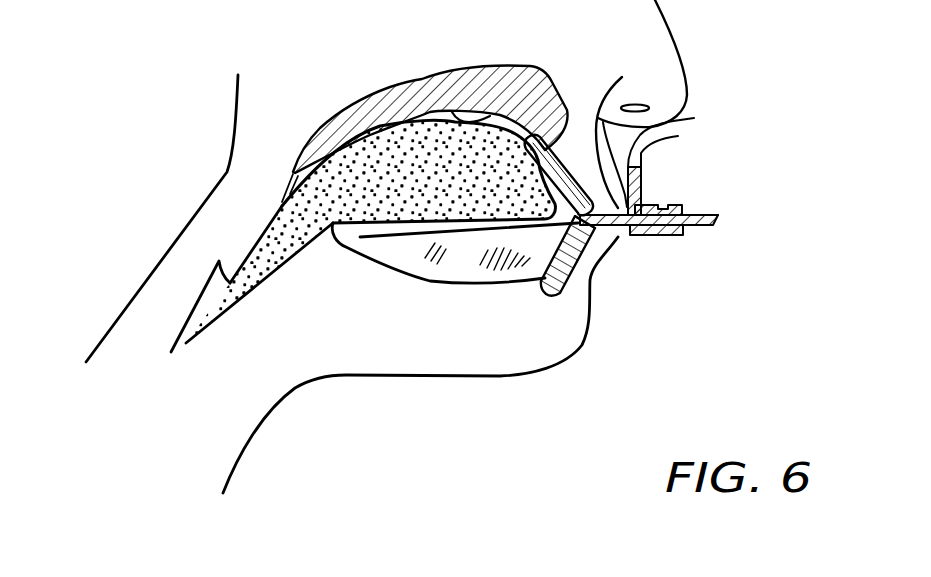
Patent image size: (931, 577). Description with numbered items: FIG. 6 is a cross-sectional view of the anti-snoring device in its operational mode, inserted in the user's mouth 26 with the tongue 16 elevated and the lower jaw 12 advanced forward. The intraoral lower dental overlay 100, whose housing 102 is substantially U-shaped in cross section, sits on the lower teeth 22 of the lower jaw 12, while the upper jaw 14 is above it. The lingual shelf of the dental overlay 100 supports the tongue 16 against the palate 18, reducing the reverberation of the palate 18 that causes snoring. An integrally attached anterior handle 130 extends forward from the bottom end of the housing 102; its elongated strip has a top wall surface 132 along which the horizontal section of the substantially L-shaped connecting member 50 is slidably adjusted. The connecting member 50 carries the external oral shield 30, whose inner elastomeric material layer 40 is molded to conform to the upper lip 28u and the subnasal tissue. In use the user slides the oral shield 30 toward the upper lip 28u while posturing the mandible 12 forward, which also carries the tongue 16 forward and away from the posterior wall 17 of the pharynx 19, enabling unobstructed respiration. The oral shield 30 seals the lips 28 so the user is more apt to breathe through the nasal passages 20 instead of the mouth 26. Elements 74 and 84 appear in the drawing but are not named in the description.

The lower jaw 12 is at (460, 293).
The upper jaw 14 is at (425, 95).
The tongue 16 is at (363, 204).
The posterior wall 17 is at (229, 158).
The palate 18 is at (281, 196).
The pharynx 19 is at (178, 291).
The nasal passages 20 is at (641, 104).
The lower teeth 22 is at (532, 138).
The mouth 26 is at (579, 160).
The lips 28 is at (605, 263).
The upper lip 28u is at (643, 266).
The oral shield 30 is at (670, 147).
The inner elastomeric material layer 40 is at (673, 137).
The connecting member 50 is at (688, 203).
The upper block 74 is at (663, 206).
The post 84 is at (643, 175).
The intraoral lower dental overlay 100 is at (400, 250).
The housing 102 is at (447, 258).
The anterior handle 130 is at (710, 231).
The top wall surface 132 is at (701, 214).